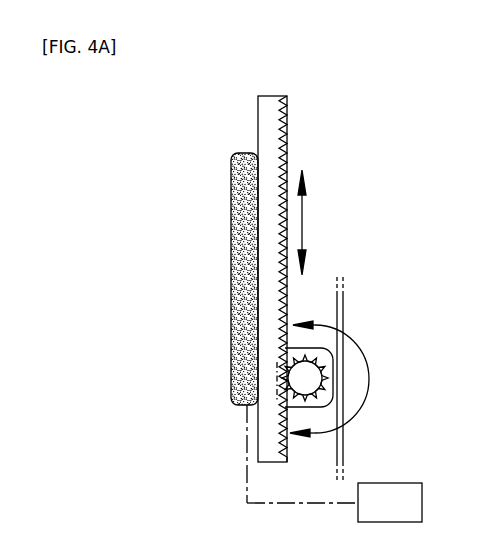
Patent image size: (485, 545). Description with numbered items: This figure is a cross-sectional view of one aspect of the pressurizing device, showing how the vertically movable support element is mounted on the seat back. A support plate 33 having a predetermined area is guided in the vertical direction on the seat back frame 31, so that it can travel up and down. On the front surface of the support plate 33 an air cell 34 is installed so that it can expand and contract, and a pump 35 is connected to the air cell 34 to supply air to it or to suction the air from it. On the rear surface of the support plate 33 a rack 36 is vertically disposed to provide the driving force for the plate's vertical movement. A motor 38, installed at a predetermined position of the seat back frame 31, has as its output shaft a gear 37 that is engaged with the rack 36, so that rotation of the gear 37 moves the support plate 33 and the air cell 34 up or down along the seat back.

The seat back frame 31 is at (340, 315).
The support plate 33 is at (265, 125).
The air cell 34 is at (231, 228).
The pump 35 is at (408, 483).
The rack 36 is at (288, 140).
The gear 37 is at (313, 378).
The motor 38 is at (348, 338).